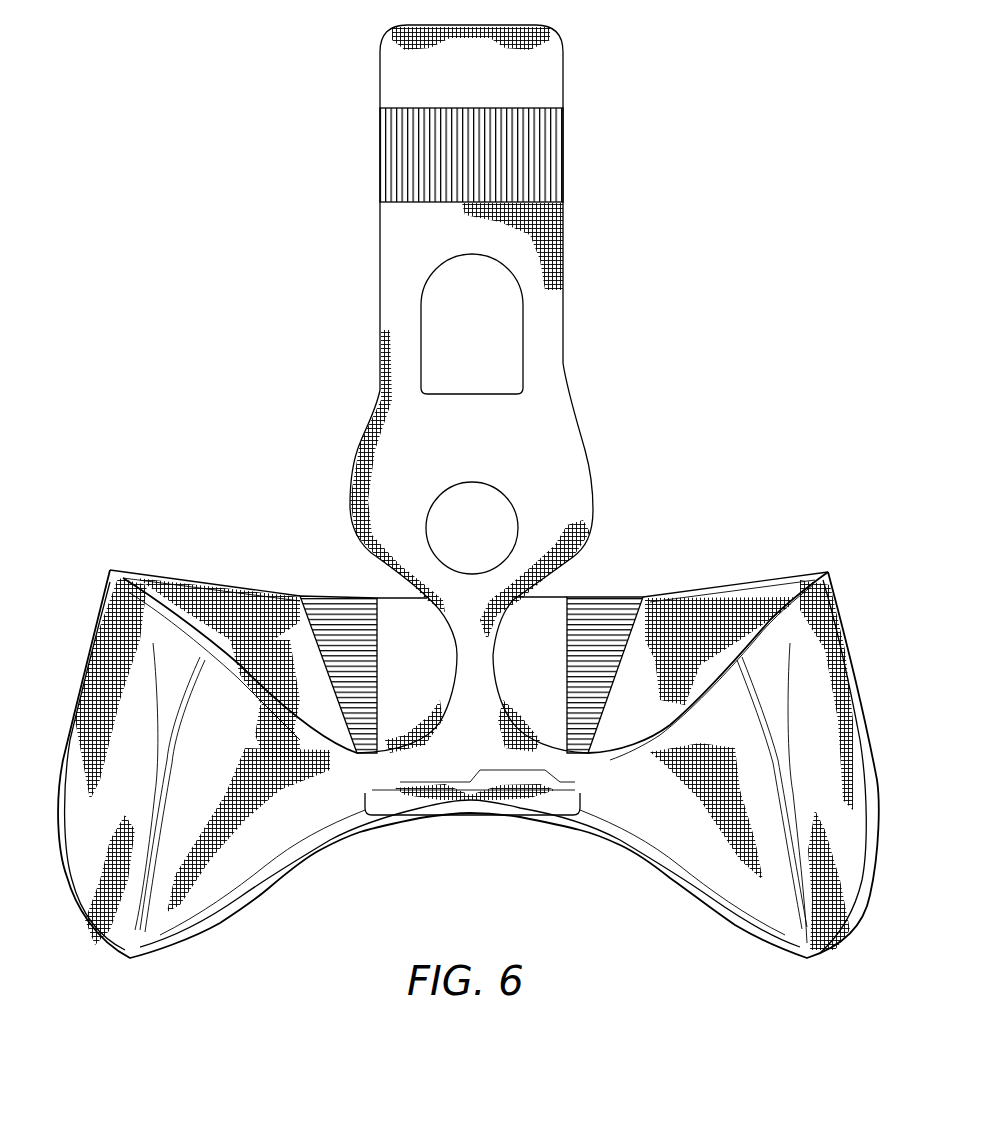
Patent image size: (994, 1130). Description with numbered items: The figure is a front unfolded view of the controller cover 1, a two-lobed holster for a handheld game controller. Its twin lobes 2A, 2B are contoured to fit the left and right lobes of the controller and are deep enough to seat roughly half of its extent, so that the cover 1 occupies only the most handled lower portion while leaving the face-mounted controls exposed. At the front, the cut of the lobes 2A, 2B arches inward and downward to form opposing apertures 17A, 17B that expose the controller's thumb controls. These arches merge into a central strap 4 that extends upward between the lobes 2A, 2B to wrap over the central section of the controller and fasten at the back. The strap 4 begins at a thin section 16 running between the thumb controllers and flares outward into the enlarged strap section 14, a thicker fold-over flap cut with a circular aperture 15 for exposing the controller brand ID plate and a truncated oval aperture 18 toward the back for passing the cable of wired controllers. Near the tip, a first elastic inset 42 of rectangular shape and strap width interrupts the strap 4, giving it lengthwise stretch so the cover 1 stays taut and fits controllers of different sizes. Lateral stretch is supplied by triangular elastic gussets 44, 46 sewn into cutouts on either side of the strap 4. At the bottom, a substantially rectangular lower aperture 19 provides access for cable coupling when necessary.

The controller cover 1 is at (192, 465).
The lobe 2A is at (65, 747).
The lobe 2B is at (875, 763).
The central strap 4 is at (379, 393).
The enlarged strap section 14 is at (461, 226).
The circular aperture 15 is at (560, 505).
The thin section 16 is at (467, 632).
The aperture 17A is at (437, 700).
The aperture 17B is at (520, 717).
The truncated oval aperture 18 is at (529, 324).
The lower aperture 19 is at (473, 797).
The first elastic inset 42 is at (562, 145).
The elastic gusset 44 is at (328, 597).
The elastic gusset 46 is at (598, 607).